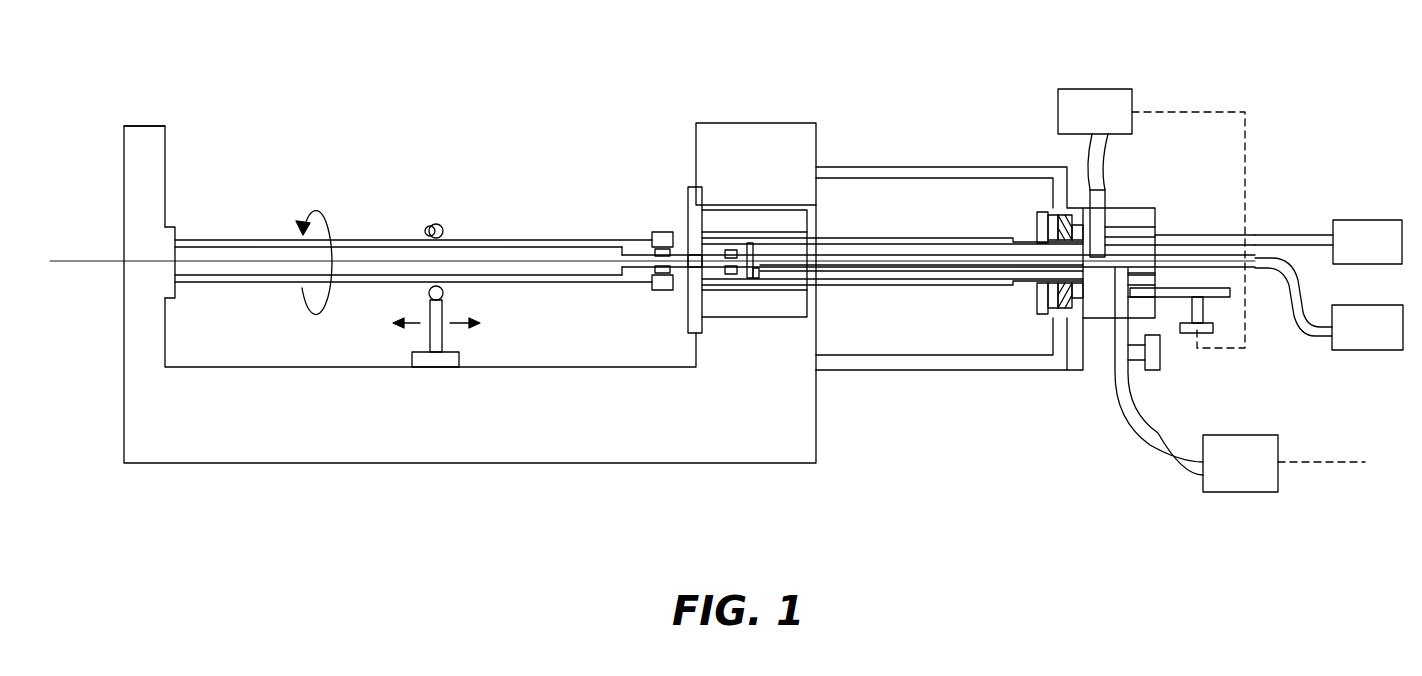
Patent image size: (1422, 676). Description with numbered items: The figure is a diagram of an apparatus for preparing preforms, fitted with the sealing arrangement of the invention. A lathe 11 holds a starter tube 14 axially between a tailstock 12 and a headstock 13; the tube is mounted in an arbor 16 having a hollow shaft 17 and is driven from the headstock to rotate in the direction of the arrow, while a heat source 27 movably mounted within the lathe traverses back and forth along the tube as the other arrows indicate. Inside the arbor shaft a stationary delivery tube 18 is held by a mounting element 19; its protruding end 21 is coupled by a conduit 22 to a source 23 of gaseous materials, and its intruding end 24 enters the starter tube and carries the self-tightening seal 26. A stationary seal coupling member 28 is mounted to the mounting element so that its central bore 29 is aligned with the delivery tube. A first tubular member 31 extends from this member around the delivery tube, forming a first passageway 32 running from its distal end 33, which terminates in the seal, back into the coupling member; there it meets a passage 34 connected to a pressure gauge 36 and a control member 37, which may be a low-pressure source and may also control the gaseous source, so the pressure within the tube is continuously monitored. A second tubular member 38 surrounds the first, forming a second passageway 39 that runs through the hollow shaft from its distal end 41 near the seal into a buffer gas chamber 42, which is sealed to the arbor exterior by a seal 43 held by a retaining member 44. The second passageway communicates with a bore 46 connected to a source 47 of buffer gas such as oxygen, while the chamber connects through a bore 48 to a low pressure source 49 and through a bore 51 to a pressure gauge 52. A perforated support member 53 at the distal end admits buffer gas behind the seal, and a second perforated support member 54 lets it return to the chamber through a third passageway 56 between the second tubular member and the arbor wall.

The lathe 11 is at (577, 445).
The tailstock 12 is at (135, 140).
The headstock 13 is at (745, 123).
The starter tube 14 is at (192, 242).
The arbor 16 is at (658, 232).
The hollow shaft 17 is at (843, 237).
The delivery tube 18 is at (633, 263).
The mounting element 19 is at (942, 370).
The protruding end 21 is at (1255, 235).
The conduit 22 is at (1302, 333).
The source of gaseous materials 23 is at (1362, 305).
The intruding end 24 is at (623, 256).
The seal 26 is at (660, 273).
The heat source 27 is at (440, 225).
The seal coupling member 28 is at (1130, 212).
The central bore 29 is at (1173, 242).
The first tubular member 31 is at (687, 277).
The first passageway 32 is at (702, 257).
The distal end 33 is at (684, 252).
The passage 34 is at (1113, 308).
The pressure gauge 36 is at (1150, 372).
The control member 37 is at (1237, 492).
The second tubular member 38 is at (868, 272).
The second passageway 39 is at (957, 268).
The distal end 41 is at (742, 272).
The buffer gas chamber 42 is at (1080, 233).
The seal 43 is at (1058, 313).
The retaining member 44 is at (1040, 305).
The bore 46 is at (1106, 225).
The source of buffer gas 47 is at (1083, 89).
The bore 48 is at (1148, 225).
The low pressure source 49 is at (1357, 220).
The bore 51 is at (1143, 284).
The pressure gauge 52 is at (1205, 333).
The perforated support member 53 is at (738, 250).
The second perforated support member 54 is at (758, 280).
The third passageway 56 is at (919, 239).